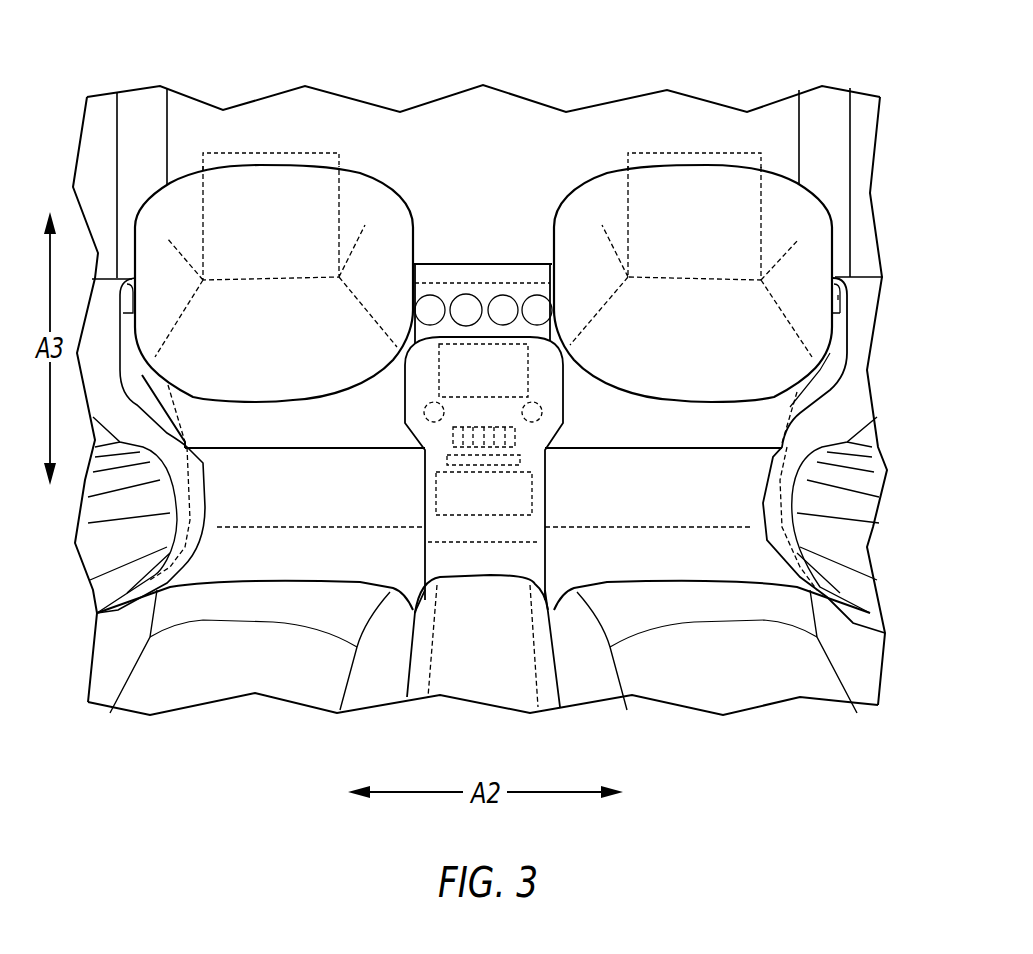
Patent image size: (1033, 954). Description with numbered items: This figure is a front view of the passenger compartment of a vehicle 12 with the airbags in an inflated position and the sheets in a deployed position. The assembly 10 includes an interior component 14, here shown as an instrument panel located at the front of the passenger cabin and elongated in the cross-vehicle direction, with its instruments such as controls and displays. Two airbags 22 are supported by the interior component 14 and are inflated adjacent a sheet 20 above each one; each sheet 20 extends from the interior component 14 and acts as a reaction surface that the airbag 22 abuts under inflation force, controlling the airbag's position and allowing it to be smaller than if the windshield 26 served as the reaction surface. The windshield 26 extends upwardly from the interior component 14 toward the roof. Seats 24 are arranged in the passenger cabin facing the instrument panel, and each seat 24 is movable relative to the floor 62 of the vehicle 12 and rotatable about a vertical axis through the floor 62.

The assembly 10 is at (862, 303).
The vehicle 12 is at (233, 45).
The interior component 14 is at (815, 335).
The sheet 20 is at (310, 153).
The airbag 22 is at (388, 188).
The seat 24 is at (213, 672).
The windshield 26 is at (637, 128).
The floor 62 is at (260, 480).